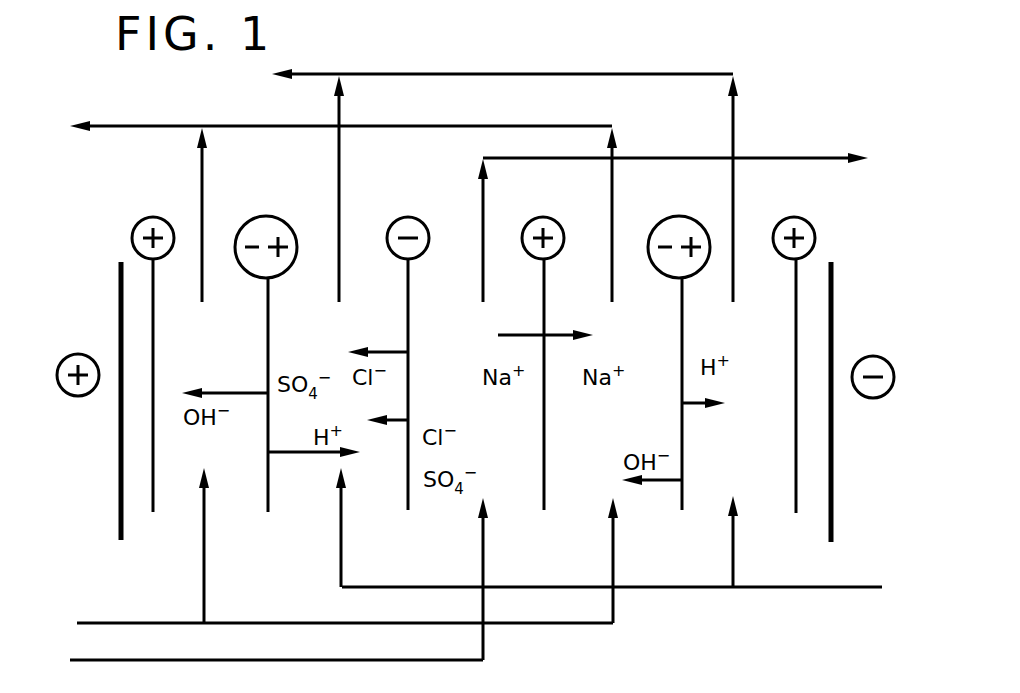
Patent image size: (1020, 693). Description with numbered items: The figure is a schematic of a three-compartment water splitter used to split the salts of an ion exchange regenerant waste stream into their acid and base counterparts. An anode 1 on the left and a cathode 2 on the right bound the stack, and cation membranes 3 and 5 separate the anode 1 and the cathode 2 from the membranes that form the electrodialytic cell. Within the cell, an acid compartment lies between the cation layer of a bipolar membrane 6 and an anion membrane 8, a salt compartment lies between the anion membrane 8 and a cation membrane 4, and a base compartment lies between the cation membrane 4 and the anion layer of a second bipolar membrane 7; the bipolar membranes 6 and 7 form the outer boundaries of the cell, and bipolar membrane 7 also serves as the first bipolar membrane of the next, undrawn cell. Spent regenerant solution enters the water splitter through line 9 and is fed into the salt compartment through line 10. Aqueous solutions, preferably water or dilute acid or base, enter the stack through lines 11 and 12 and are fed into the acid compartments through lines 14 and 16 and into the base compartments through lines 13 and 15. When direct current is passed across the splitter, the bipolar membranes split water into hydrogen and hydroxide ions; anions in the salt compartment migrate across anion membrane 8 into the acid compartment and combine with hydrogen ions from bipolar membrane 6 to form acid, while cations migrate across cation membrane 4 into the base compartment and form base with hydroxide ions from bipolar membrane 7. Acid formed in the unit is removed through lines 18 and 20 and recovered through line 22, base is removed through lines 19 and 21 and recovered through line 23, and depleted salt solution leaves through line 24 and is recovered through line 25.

The anode 1 is at (119, 340).
The cathode 2 is at (833, 336).
The cation membrane 3 is at (155, 322).
The cation membrane 4 is at (543, 292).
The cation membrane 5 is at (796, 325).
The bipolar membrane 6 is at (268, 312).
The bipolar membrane 7 is at (682, 318).
The anion membrane 8 is at (408, 292).
The line 9 is at (200, 660).
The line 10 is at (485, 640).
The line 11 is at (133, 622).
The line 12 is at (848, 586).
The line 13 is at (206, 527).
The line 14 is at (343, 527).
The line 15 is at (615, 546).
The line 16 is at (736, 532).
The line 18 is at (341, 112).
The line 19 is at (200, 160).
The line 20 is at (737, 113).
The line 21 is at (615, 146).
The line 22 is at (300, 74).
The line 23 is at (123, 126).
The line 24 is at (482, 196).
The line 25 is at (797, 157).